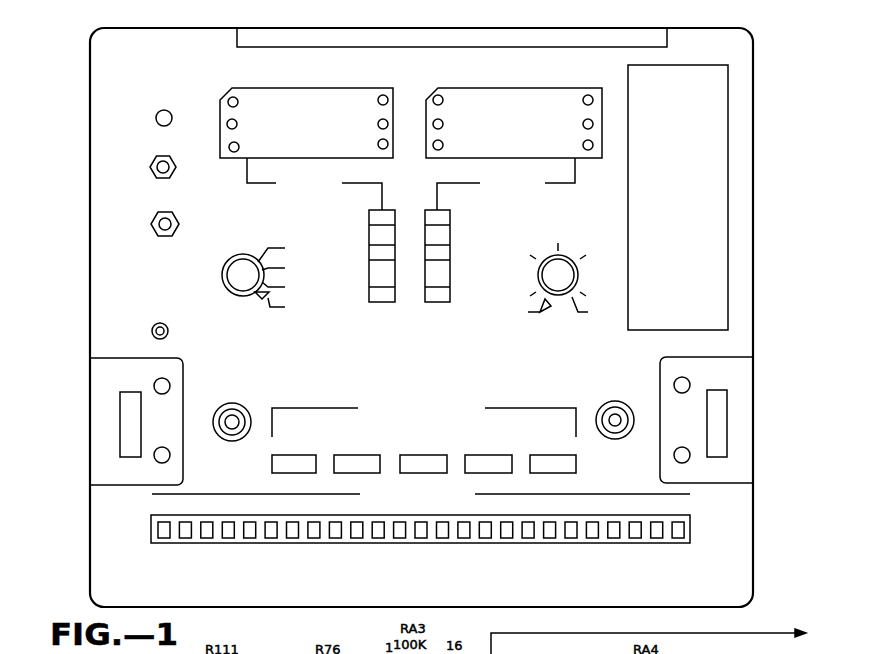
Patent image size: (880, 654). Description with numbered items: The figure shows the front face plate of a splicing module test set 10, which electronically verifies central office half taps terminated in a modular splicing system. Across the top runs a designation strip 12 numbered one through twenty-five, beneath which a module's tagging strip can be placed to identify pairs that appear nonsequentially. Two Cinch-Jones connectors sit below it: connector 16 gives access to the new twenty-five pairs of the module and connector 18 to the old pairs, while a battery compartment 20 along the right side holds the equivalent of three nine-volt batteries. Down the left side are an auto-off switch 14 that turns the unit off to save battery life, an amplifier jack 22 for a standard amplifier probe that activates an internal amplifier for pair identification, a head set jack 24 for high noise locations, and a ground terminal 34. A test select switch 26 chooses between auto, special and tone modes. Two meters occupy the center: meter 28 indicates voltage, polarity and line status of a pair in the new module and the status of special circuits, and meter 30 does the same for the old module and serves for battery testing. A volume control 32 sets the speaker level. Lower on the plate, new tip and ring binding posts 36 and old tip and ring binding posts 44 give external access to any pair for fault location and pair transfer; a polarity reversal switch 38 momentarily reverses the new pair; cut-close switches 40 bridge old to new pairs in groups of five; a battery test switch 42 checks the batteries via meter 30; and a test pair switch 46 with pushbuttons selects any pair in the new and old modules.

The splicing module test set 10 is at (62, 26).
The designation strip 12 is at (425, 28).
The auto-off switch 14 is at (156, 120).
The Cinch-Jones connector 16 is at (240, 88).
The Cinch-Jones connector 18 is at (603, 96).
The battery compartment 20 is at (728, 218).
The amplifier jack 22 is at (150, 172).
The head set jack 24 is at (150, 240).
The test select switch 26 is at (222, 270).
The meter 28 is at (372, 302).
The meter 30 is at (445, 302).
The volume control 32 is at (565, 297).
The ground terminal 34 is at (152, 331).
The new tip and ring external access binding posts 36 is at (118, 428).
The polarity reversal switch 38 is at (222, 440).
The cut-close switches 40 is at (416, 394).
The battery test switch 42 is at (610, 438).
The old tip and ring external access binding posts 44 is at (718, 430).
The test pair switch 46 is at (695, 526).